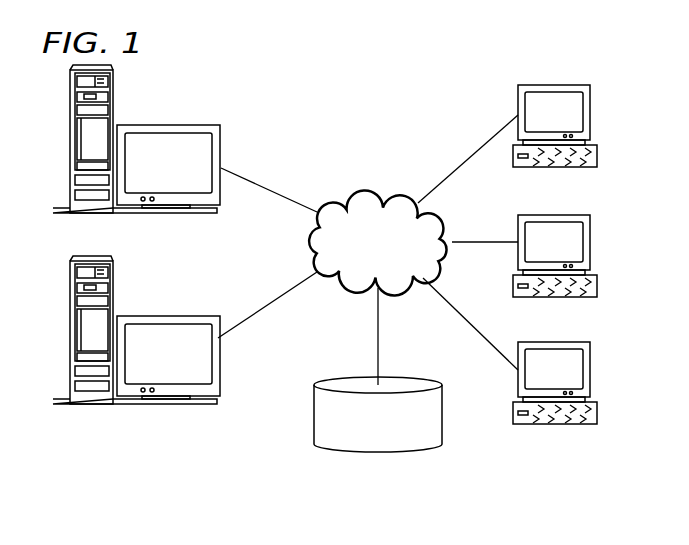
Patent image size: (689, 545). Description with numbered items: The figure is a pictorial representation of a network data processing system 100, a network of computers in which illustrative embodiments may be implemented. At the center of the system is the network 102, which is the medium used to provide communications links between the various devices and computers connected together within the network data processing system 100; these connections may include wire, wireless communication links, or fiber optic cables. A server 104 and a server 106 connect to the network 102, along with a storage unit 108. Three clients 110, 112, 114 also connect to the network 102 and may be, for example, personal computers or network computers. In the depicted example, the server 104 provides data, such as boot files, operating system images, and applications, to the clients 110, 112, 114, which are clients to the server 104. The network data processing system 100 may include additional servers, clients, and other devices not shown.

The network data processing system 100 is at (431, 89).
The network 102 is at (348, 198).
The server 104 is at (68, 139).
The server 106 is at (70, 331).
The storage unit 108 is at (362, 455).
The client 110 is at (590, 112).
The client 112 is at (590, 242).
The client 114 is at (590, 372).